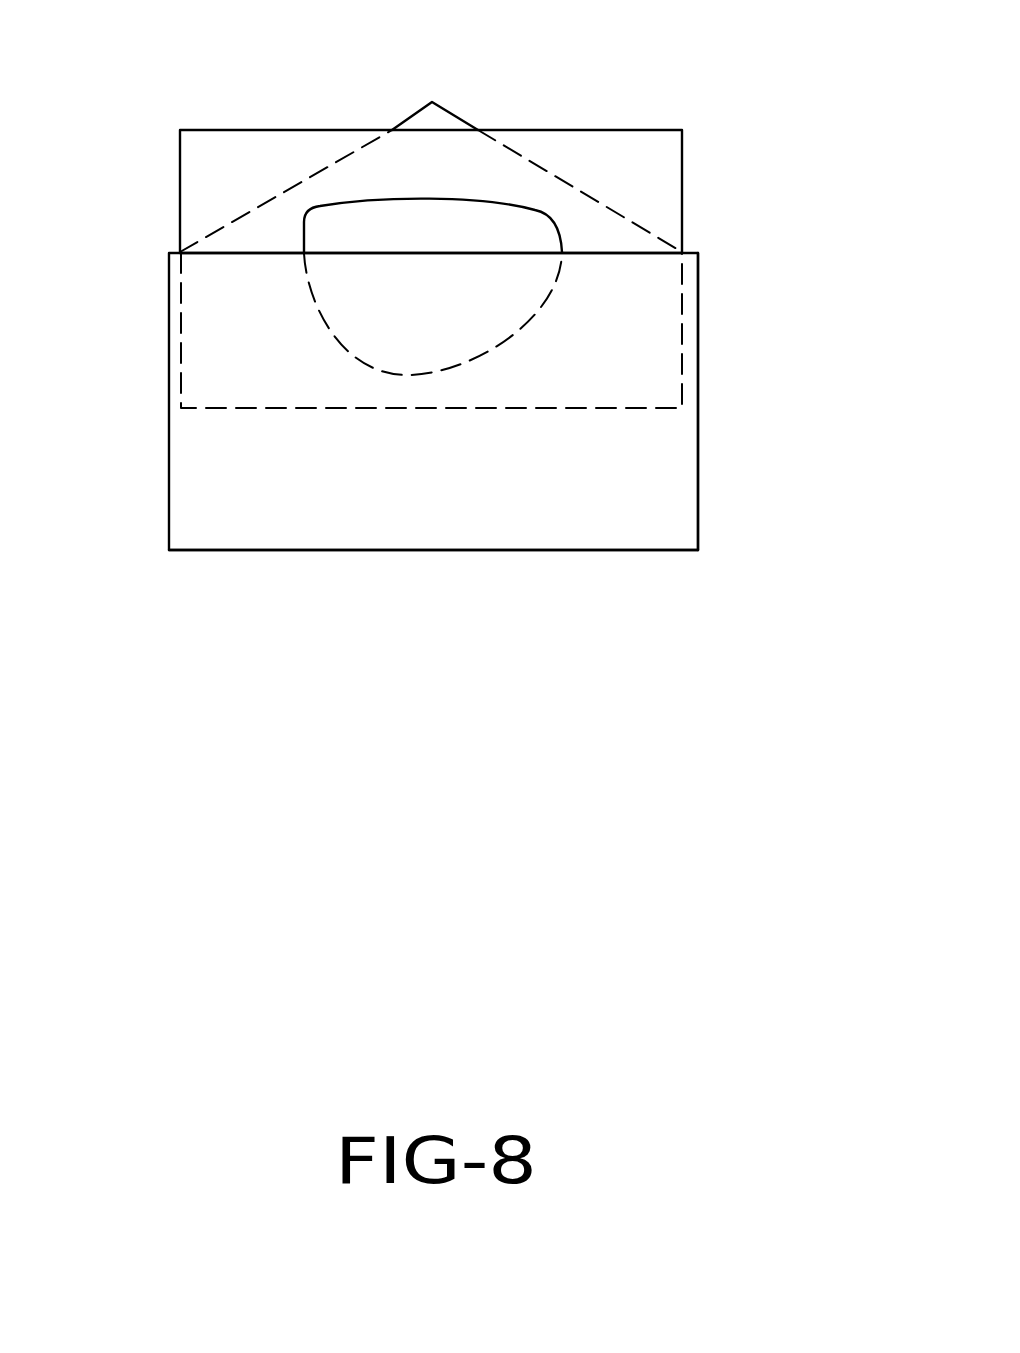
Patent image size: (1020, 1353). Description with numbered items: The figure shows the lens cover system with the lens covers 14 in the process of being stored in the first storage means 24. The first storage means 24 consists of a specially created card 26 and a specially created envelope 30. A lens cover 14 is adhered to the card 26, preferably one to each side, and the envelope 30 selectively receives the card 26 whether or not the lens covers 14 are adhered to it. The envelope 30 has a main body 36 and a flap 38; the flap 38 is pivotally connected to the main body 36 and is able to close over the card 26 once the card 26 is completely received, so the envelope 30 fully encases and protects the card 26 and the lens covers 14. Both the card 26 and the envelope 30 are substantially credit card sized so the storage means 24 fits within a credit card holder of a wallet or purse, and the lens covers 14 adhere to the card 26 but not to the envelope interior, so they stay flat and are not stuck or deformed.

The lens cover 14 is at (367, 213).
The first storage means 24 is at (151, 136).
The card 26 is at (645, 127).
The envelope 30 is at (698, 368).
The main body 36 is at (698, 520).
The flap 38 is at (432, 102).